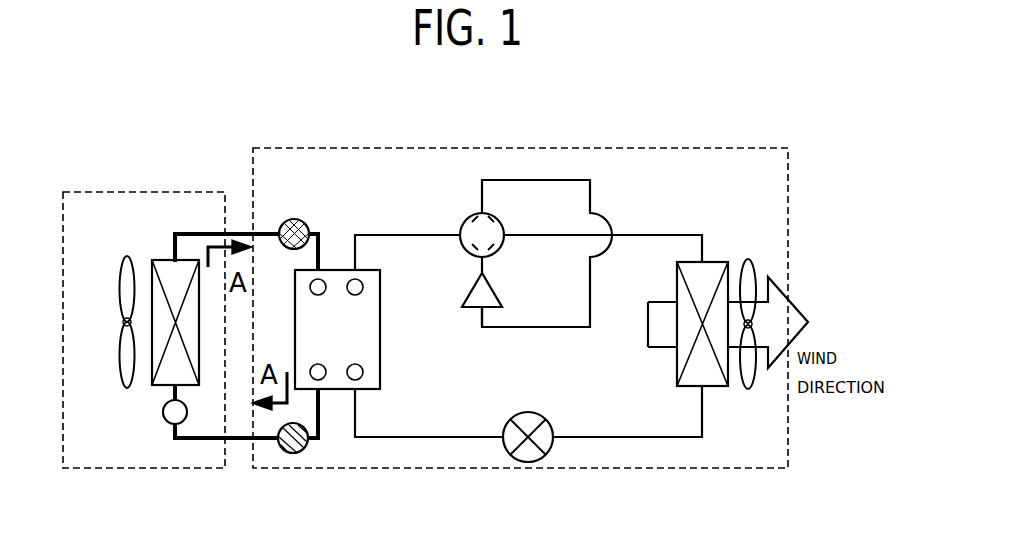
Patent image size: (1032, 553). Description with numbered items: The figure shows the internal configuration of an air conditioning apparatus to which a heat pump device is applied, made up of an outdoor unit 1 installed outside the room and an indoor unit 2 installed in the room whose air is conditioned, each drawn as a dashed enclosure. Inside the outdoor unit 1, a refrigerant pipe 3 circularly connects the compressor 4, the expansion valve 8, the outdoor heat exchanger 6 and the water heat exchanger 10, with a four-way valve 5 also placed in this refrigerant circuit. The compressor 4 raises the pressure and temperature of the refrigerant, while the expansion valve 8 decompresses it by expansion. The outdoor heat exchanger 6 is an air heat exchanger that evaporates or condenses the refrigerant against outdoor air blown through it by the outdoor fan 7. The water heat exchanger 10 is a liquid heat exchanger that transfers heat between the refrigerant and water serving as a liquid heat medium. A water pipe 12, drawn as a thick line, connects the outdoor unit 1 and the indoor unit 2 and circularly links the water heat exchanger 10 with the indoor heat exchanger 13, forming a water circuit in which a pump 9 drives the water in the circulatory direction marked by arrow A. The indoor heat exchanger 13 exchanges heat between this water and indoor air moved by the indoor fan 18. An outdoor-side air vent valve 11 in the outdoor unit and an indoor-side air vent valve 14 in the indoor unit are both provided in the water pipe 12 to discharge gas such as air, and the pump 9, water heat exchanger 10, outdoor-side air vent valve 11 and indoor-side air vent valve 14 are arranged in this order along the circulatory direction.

The outdoor unit 1 is at (716, 148).
The indoor unit 2 is at (102, 192).
The refrigerant pipe 3 is at (652, 235).
The compressor 4 is at (466, 288).
The four-way valve 5 is at (470, 218).
The outdoor heat exchanger 6 is at (712, 262).
The outdoor fan 7 is at (748, 260).
The expansion valve 8 is at (528, 412).
The pump 9 is at (302, 221).
The water heat exchanger 10 is at (383, 333).
The outdoor-side air vent valve 11 is at (286, 452).
The water pipe 12 is at (243, 233).
The indoor heat exchanger 13 is at (160, 260).
The indoor-side air vent valve 14 is at (165, 421).
The indoor fan 18 is at (127, 388).